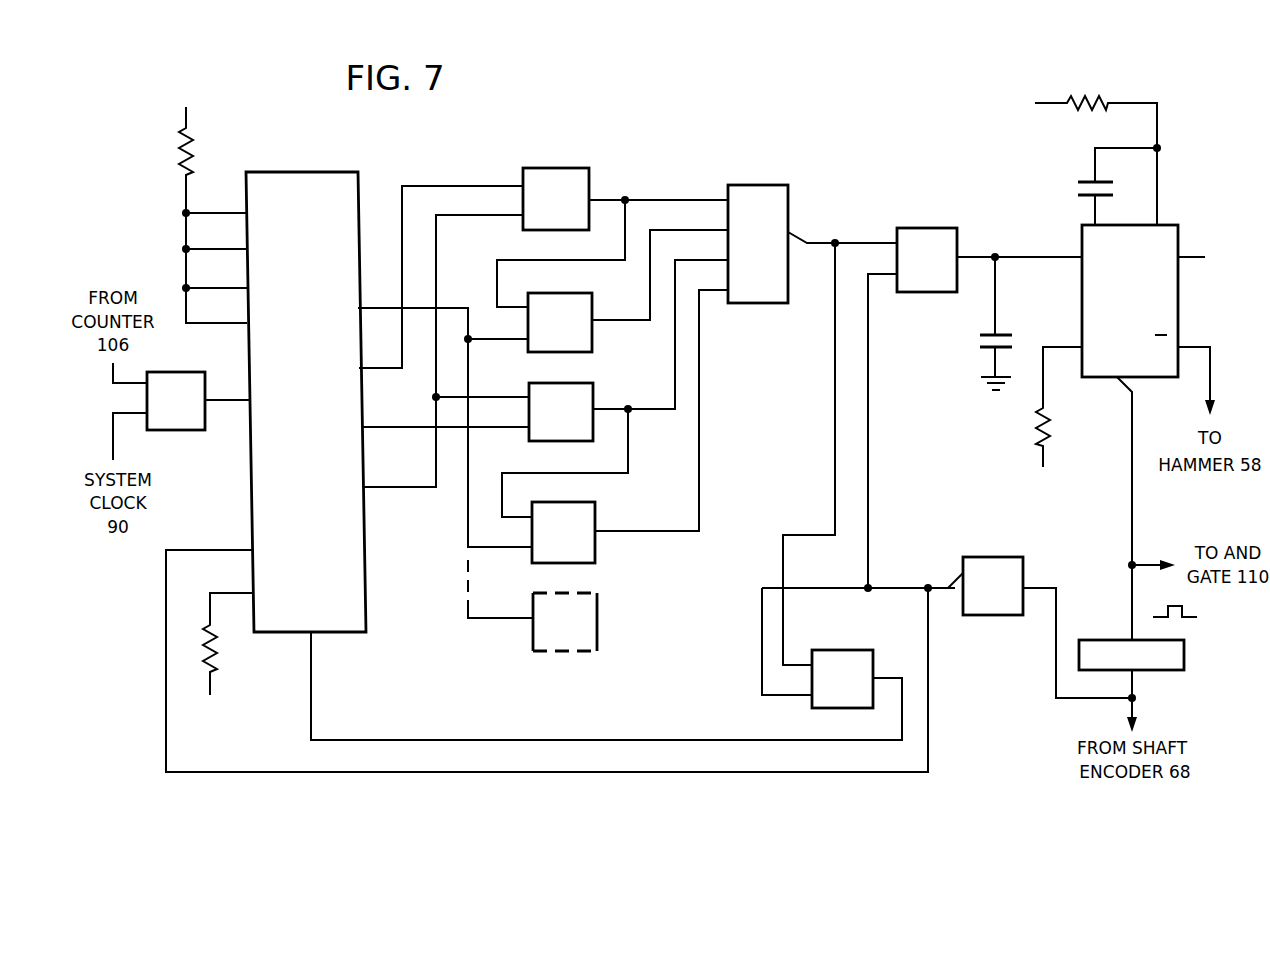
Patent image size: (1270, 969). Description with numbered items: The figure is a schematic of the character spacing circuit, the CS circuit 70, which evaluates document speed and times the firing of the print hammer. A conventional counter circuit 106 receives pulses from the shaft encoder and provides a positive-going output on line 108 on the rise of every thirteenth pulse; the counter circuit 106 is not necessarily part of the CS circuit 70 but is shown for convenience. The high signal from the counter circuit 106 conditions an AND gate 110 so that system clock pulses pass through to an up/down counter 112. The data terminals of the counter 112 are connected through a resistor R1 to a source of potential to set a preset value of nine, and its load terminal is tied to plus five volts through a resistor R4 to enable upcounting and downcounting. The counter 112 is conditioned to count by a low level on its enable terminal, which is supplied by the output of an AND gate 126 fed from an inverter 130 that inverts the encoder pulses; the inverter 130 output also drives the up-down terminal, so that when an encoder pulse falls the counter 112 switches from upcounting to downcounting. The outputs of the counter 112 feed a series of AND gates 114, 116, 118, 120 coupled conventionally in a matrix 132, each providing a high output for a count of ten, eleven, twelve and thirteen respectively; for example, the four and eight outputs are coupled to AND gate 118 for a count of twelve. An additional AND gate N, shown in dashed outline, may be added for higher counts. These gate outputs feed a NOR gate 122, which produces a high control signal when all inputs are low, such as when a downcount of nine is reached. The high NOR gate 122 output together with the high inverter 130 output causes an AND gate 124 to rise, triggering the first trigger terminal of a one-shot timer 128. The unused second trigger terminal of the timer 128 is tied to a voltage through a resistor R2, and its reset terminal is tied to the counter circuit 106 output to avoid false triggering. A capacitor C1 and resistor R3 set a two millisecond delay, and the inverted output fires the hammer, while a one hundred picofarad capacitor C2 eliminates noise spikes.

The CS circuit 70 is at (568, 140).
The counter circuit 106 is at (1190, 650).
The line 108 is at (1132, 597).
The AND gate 110 is at (170, 378).
The up/down counter 112 is at (287, 180).
The AND gate 114 is at (577, 185).
The AND gate 116 is at (570, 303).
The AND gate 118 is at (575, 400).
The AND gate 120 is at (585, 522).
The NOR gate 122 is at (750, 195).
The AND gate 124 is at (945, 235).
The AND gate 126 is at (845, 655).
The one-shot timer 128 is at (1160, 240).
The inverter 130 is at (987, 560).
The matrix 132 is at (658, 545).
The AND gate N is at (590, 632).
The resistor R1 is at (175, 150).
The resistor R2 is at (1040, 442).
The resistor R3 is at (1075, 100).
The resistor R4 is at (215, 655).
The capacitor C1 is at (1088, 182).
The capacitor C2 is at (1005, 330).